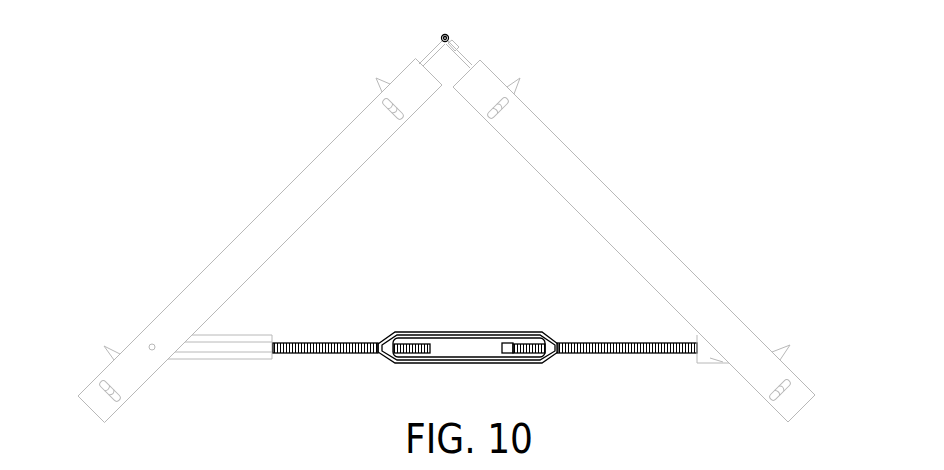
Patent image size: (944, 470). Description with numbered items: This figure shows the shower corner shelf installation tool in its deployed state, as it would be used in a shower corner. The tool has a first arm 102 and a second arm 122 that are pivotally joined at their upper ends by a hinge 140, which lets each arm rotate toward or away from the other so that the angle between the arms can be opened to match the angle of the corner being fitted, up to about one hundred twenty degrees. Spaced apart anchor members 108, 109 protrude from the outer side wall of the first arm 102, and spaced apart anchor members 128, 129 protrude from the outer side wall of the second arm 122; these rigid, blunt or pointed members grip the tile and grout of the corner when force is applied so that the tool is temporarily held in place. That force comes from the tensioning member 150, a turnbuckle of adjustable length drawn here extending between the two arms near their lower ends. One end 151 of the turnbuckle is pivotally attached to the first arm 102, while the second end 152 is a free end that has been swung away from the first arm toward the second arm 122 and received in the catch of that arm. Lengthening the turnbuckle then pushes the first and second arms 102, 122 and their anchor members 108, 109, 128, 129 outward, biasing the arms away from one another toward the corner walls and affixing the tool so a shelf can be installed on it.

The first arm 102 is at (662, 258).
The anchor member 108 is at (780, 356).
The anchor member 109 is at (512, 87).
The second arm 122 is at (263, 215).
The anchor member 128 is at (112, 354).
The anchor member 129 is at (385, 86).
The hinge 140 is at (448, 36).
The tensioning member 150 is at (518, 363).
The one end of tensioning member 151 is at (237, 356).
The second end of tensioning member 152 is at (714, 360).